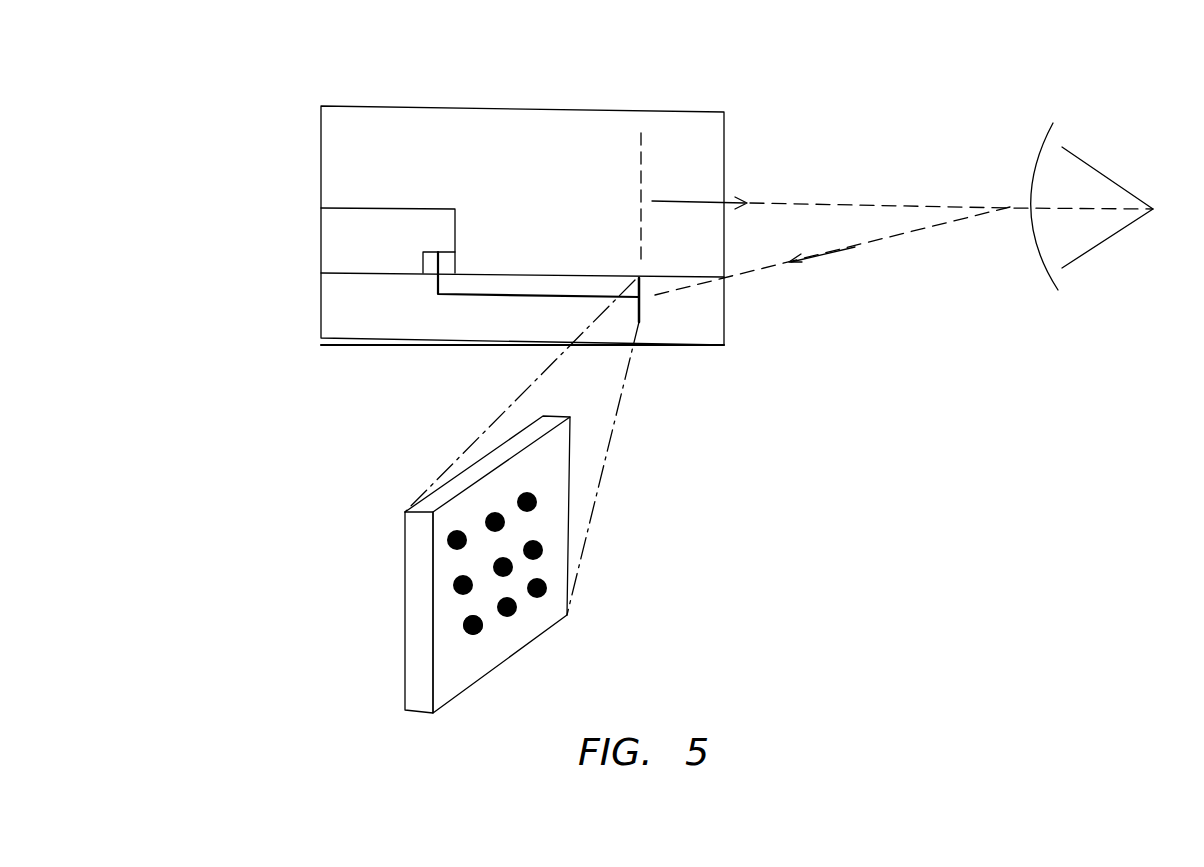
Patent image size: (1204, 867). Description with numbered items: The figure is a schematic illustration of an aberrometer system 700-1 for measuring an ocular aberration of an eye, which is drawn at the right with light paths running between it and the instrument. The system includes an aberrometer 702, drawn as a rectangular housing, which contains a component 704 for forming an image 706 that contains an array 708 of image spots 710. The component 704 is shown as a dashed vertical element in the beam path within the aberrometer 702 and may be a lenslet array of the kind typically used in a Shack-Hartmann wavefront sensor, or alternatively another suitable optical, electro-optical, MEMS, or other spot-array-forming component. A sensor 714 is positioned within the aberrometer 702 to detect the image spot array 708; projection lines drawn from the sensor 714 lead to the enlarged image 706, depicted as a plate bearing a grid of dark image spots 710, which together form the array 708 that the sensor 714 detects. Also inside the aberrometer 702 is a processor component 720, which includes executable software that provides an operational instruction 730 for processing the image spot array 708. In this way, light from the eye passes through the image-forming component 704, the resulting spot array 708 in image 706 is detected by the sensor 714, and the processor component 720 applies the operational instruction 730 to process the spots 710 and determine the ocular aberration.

The aberrometer system 700-1 is at (928, 56).
The aberrometer 702 is at (320, 131).
The component for forming an image 704 is at (643, 150).
The image 706 is at (550, 626).
The array of image spots 708 is at (488, 609).
The image spots 710 is at (513, 568).
The sensor 714 is at (641, 317).
The processor component 720 is at (356, 210).
The operational instruction 730 is at (423, 265).